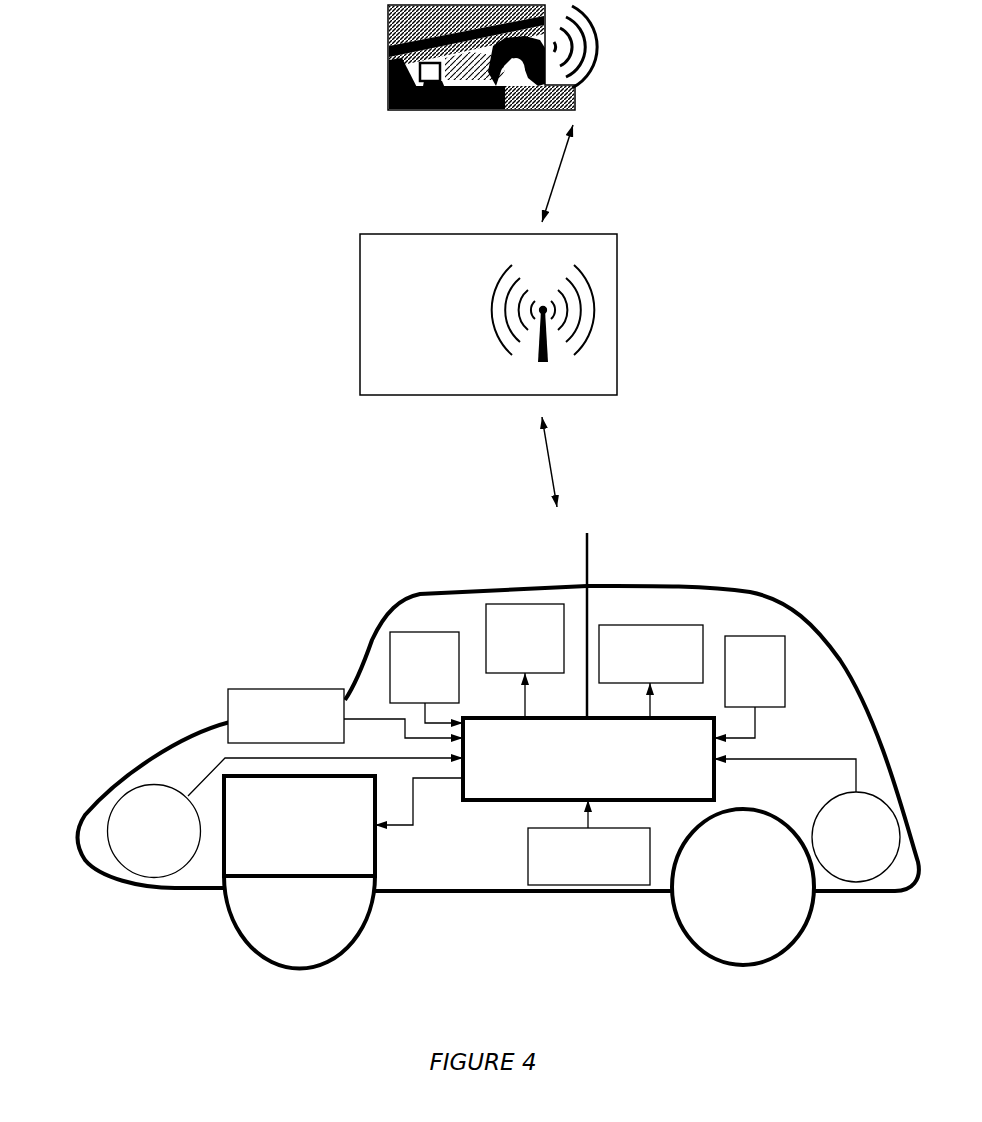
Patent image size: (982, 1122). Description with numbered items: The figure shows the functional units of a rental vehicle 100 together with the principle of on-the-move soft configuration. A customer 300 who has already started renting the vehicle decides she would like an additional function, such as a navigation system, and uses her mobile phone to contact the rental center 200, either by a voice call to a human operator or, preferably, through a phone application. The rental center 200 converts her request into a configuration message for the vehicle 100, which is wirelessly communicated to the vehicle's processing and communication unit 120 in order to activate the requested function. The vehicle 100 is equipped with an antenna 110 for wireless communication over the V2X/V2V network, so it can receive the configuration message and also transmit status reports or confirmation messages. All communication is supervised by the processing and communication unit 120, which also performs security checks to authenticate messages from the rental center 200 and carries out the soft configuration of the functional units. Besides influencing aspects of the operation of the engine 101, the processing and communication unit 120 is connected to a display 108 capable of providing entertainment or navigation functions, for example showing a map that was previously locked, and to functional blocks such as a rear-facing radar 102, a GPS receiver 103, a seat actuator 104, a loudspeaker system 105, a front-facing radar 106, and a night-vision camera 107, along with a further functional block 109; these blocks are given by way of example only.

The customer 300 is at (528, 57).
The rental center 200 is at (526, 314).
The vehicle 100 is at (498, 777).
The antenna 110 is at (625, 625).
The processing and communication unit 120 is at (588, 759).
The engine 101 is at (343, 826).
The rear-facing radar 102 is at (807, 820).
The GPS receiver 103 is at (651, 671).
The seat actuator 104 is at (589, 842).
The loudspeaker system 105 is at (426, 677).
The front-facing radar 106 is at (286, 818).
The night-vision camera 107 is at (345, 716).
The display 108 is at (525, 661).
The vehicle component 109 is at (749, 687).